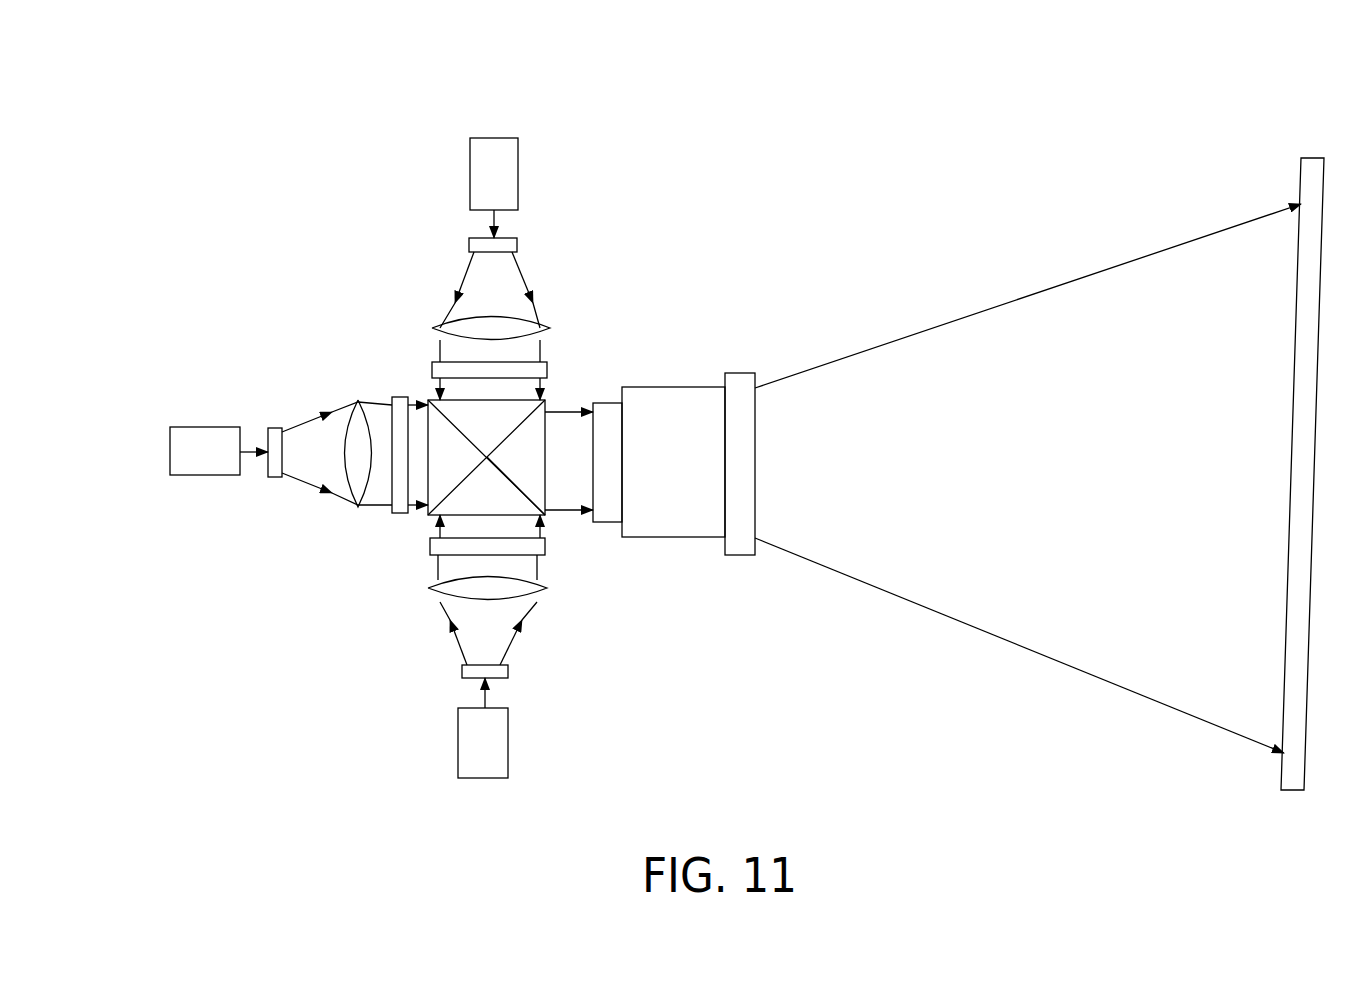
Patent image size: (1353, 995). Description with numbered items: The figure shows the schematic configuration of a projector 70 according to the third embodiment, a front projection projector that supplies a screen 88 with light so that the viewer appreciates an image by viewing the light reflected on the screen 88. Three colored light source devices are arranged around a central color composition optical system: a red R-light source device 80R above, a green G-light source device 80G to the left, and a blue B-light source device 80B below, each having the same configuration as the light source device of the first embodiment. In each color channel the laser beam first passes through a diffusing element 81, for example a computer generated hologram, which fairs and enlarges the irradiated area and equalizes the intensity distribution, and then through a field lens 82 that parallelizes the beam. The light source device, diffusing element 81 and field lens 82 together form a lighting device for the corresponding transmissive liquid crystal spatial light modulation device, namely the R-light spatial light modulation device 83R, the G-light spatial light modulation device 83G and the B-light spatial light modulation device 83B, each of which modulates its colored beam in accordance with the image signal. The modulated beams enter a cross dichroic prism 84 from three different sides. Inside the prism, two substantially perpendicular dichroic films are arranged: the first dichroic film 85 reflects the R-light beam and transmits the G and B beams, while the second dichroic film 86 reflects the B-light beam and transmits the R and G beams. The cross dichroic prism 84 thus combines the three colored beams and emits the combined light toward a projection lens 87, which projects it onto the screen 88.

The projector 70 is at (337, 105).
The R-light source device 80R is at (507, 162).
The G-light source device 80G is at (190, 427).
The B-light source device 80B is at (465, 745).
The diffusing element 81 is at (517, 245).
The field lens 82 is at (547, 327).
The R-light spatial light modulation device 83R is at (583, 356).
The G-light spatial light modulation device 83G is at (403, 397).
The B-light spatial light modulation device 83B is at (430, 545).
The cross dichroic prism 84 is at (420, 520).
The first dichroic film 85 is at (532, 503).
The second dichroic film 86 is at (545, 412).
The projection lens 87 is at (738, 382).
The screen 88 is at (1313, 158).